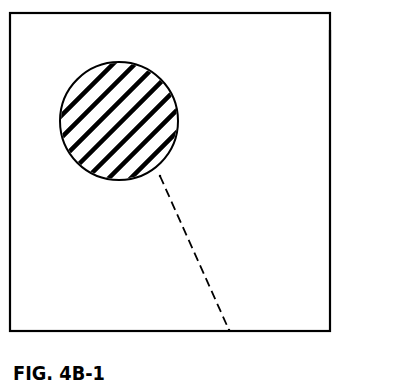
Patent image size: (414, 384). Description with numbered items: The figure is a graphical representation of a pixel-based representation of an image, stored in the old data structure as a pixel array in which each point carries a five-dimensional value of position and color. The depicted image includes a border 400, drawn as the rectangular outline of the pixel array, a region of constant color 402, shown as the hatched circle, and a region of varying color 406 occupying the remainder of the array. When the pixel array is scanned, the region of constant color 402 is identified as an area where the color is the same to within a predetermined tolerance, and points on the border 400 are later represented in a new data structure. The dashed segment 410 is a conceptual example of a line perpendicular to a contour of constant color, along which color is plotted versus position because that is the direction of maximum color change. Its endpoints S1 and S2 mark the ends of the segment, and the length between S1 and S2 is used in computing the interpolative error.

The border 400 is at (330, 118).
The region of constant color 402 is at (163, 104).
The region of varying color 406 is at (295, 58).
The segment 410 is at (185, 227).
The segment endpoint S1 is at (160, 163).
The segment endpoint S2 is at (230, 329).